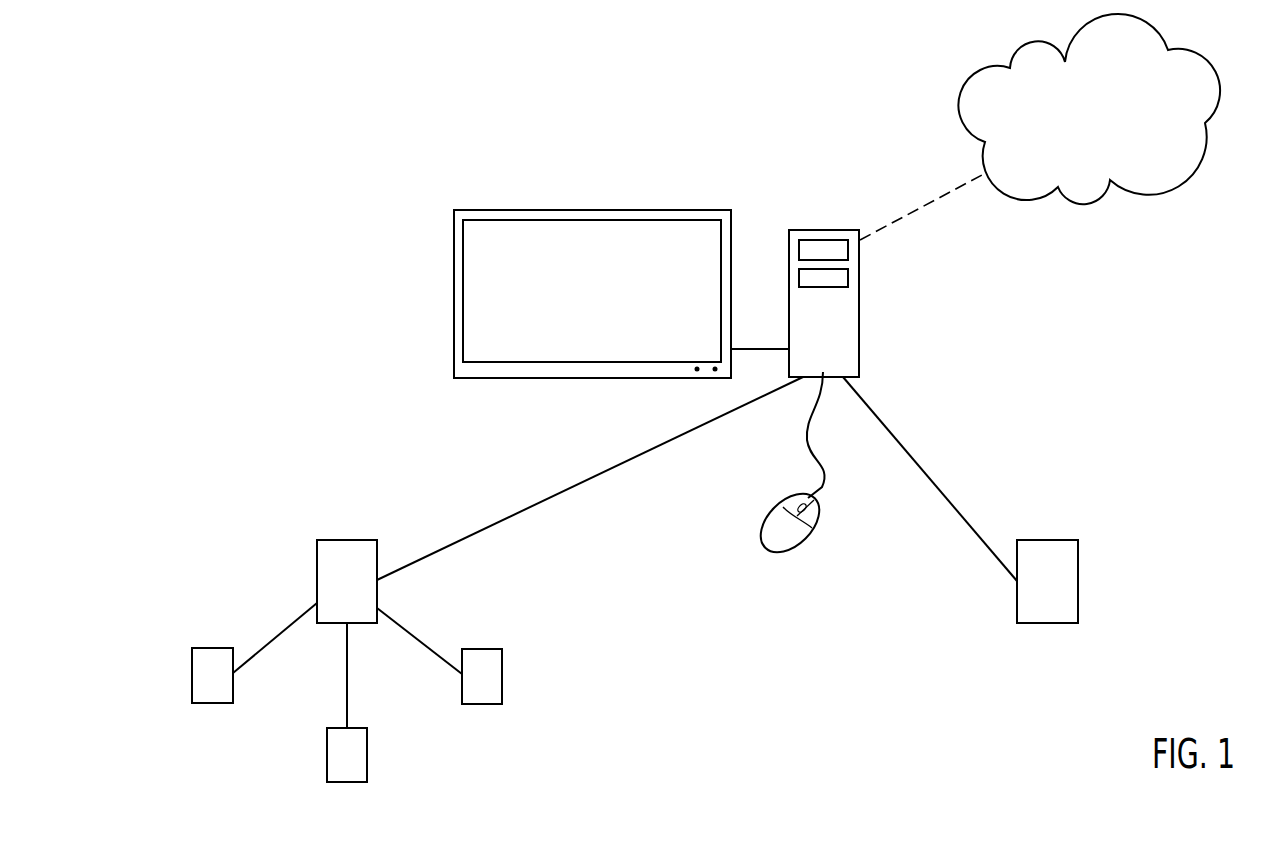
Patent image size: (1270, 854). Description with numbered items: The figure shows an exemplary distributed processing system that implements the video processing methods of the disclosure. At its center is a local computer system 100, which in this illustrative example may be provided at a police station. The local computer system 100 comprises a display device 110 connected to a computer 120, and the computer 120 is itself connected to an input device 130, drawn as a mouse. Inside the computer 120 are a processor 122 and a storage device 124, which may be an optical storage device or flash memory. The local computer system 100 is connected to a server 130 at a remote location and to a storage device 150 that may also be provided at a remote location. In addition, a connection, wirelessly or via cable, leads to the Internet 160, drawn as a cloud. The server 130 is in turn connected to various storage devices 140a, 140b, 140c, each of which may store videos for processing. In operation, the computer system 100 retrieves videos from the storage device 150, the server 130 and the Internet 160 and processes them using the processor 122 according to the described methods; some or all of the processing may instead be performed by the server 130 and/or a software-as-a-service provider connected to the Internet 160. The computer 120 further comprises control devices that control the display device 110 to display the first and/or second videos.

The local computer system 100 is at (775, 122).
The display device 110 is at (505, 210).
The computer 120 is at (857, 303).
The processor 122 is at (848, 250).
The storage device 124 is at (848, 278).
The server 130 is at (317, 555).
The storage device 140a is at (192, 668).
The storage device 140b is at (367, 745).
The storage device 140c is at (502, 667).
The storage device 150 is at (1078, 557).
The Internet 160 is at (1117, 124).